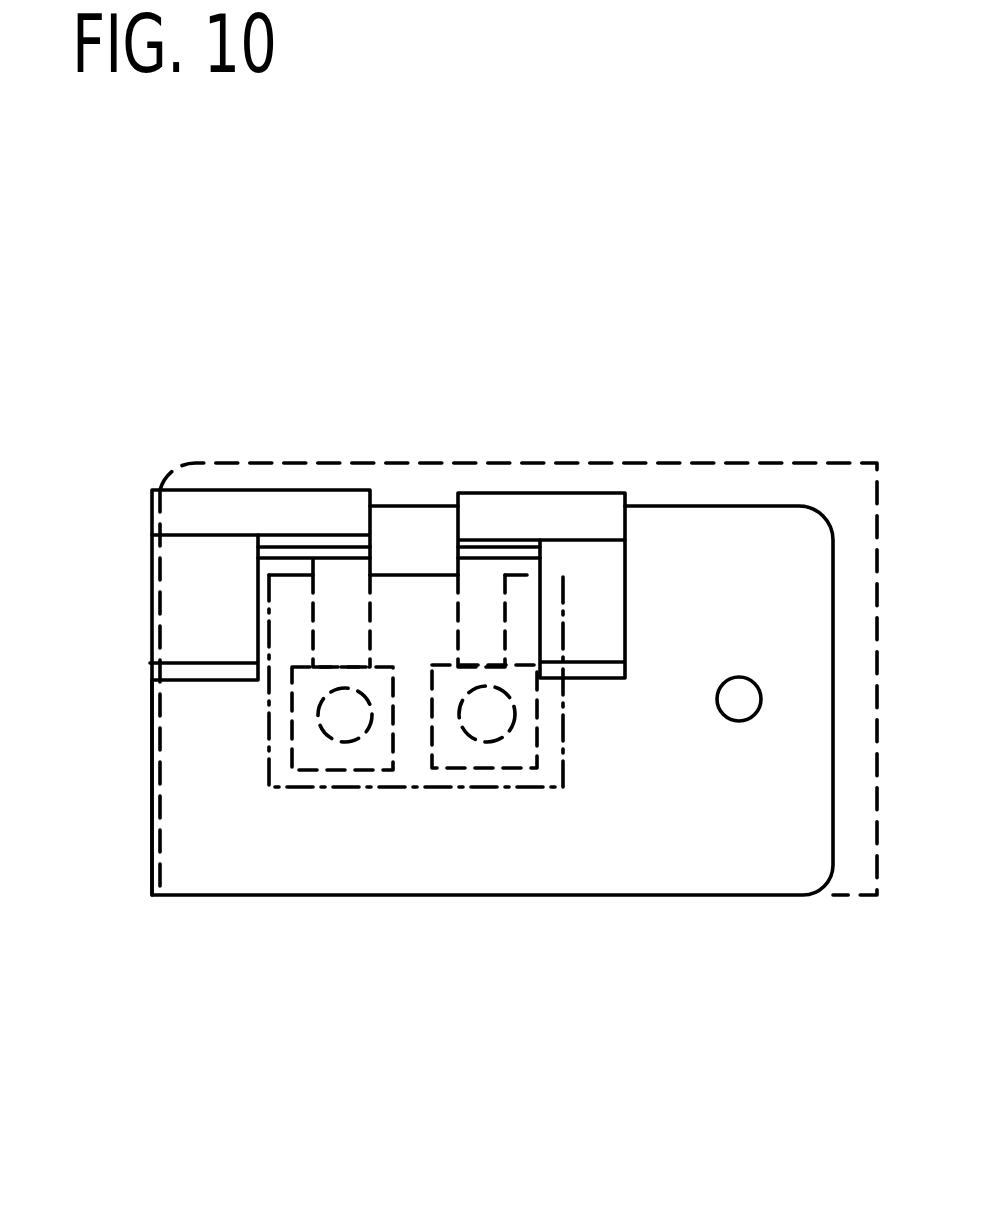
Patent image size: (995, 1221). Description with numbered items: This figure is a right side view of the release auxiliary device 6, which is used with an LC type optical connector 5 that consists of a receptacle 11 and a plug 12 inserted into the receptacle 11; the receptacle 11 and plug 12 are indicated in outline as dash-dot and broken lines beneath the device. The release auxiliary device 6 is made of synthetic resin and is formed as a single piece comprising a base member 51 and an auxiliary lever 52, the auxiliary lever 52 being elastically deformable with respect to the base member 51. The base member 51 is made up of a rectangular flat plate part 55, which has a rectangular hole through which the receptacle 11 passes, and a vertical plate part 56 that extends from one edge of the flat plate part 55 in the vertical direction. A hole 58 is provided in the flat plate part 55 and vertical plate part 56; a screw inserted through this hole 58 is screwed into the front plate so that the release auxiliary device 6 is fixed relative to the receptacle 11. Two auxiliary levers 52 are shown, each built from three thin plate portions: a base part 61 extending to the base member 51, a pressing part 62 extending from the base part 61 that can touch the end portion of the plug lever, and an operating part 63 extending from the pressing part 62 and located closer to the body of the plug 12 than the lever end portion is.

The release auxiliary device 6 is at (513, 155).
The optical connector 5 is at (438, 837).
The receptacle 11 is at (530, 787).
The plug 12 is at (457, 755).
The base member 51 is at (445, 799).
The auxiliary lever 52 is at (430, 458).
The flat plate part 55 is at (196, 878).
The vertical plate part 56 is at (107, 836).
The hole 58 is at (739, 677).
The base part 61 is at (355, 490).
The pressing part 62 is at (282, 547).
The operating part 63 is at (198, 663).